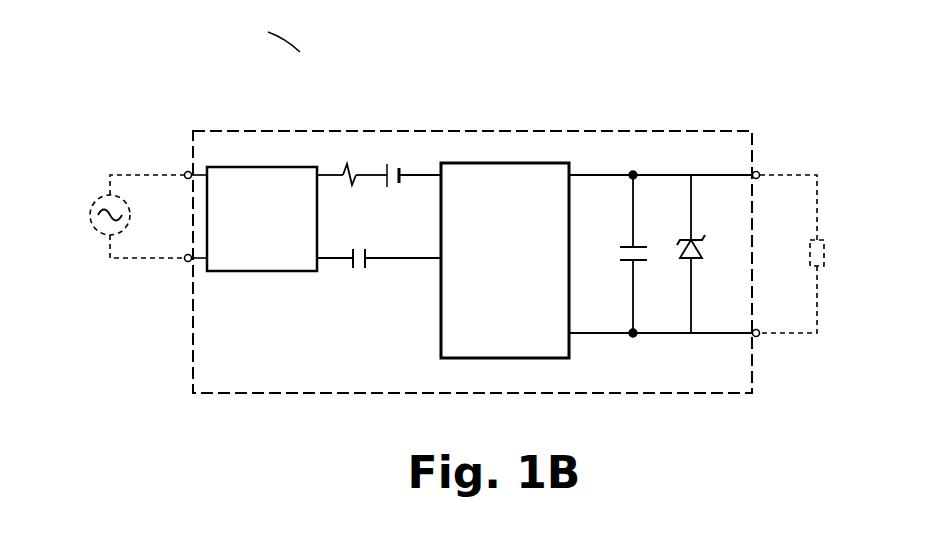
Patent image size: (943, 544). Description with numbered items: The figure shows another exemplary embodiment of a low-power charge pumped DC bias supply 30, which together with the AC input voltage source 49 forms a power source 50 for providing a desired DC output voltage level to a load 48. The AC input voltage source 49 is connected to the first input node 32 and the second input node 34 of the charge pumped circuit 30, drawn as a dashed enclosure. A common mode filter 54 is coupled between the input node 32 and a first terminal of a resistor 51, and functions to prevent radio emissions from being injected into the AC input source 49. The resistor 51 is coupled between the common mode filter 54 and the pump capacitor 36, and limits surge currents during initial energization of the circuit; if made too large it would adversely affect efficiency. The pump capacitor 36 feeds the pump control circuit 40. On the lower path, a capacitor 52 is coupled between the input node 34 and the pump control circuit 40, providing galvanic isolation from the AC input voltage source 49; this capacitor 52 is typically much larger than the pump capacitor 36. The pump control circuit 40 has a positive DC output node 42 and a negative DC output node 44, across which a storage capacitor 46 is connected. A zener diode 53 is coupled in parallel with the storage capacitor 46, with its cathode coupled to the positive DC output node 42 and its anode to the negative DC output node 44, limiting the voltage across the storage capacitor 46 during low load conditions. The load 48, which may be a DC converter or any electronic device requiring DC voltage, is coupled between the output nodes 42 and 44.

The power source 50 is at (308, 60).
The low-power charge pumped DC bias supply 30 is at (387, 130).
The AC input voltage source 49 is at (88, 216).
The first input node 32 is at (187, 171).
The second input node 34 is at (187, 261).
The common mode filter 54 is at (263, 272).
The resistor 51 is at (343, 170).
The pump capacitor 36 is at (390, 188).
The capacitor 52 is at (357, 270).
The pump control circuit 40 is at (505, 260).
The storage capacitor 46 is at (630, 262).
The zener diode 53 is at (700, 243).
The positive DC output node 42 is at (759, 171).
The negative DC output node 44 is at (759, 337).
The load 48 is at (826, 250).